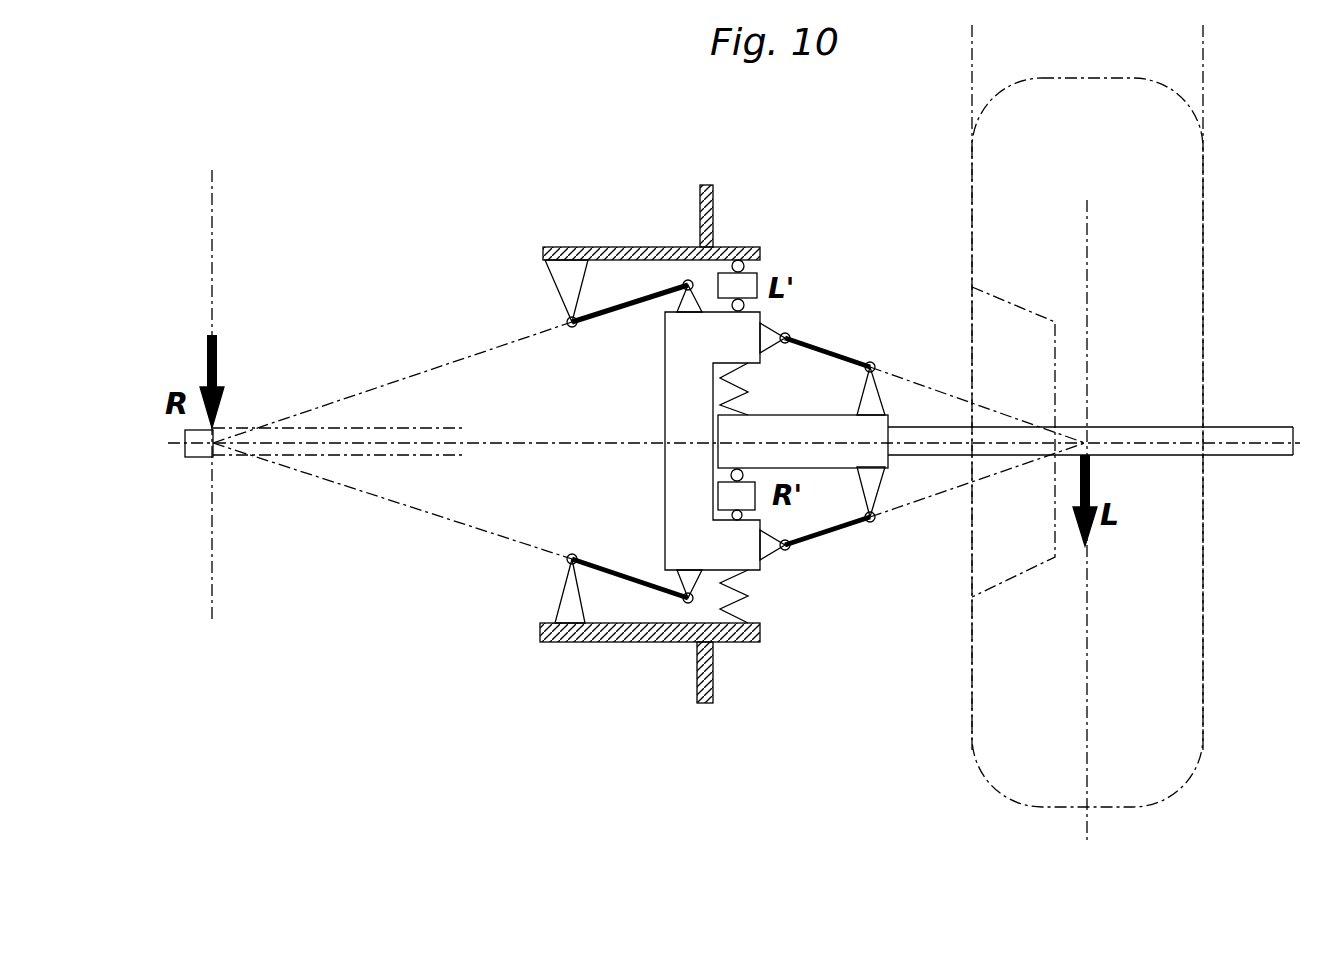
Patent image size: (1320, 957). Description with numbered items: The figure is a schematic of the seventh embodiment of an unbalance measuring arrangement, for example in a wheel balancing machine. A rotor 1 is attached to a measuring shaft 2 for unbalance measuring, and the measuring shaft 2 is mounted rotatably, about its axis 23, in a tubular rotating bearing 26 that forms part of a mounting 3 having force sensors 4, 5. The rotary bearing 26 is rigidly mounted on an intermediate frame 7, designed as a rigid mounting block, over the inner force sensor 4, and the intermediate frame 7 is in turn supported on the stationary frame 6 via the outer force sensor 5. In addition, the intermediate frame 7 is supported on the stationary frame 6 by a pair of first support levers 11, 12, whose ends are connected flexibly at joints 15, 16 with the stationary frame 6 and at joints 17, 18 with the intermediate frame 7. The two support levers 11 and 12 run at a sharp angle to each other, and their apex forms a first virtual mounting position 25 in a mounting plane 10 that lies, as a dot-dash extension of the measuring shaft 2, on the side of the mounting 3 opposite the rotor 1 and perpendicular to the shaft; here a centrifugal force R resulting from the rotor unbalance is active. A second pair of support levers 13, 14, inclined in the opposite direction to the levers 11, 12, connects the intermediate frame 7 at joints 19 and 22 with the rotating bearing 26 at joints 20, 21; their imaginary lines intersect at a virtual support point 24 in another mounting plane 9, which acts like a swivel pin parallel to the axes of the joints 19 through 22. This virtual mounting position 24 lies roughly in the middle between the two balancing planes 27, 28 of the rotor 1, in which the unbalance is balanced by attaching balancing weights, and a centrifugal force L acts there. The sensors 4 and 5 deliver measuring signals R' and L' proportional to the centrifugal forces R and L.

The rotor 1 is at (1090, 75).
The measuring shaft 2 is at (1255, 455).
The mounting 3 is at (580, 458).
The inner force sensor 4 is at (718, 498).
The outer force sensor 5 is at (747, 283).
The stationary frame 6 is at (596, 232).
The intermediate frame 7 is at (673, 473).
The mounting plane 9 is at (1087, 245).
The mounting plane 10 is at (212, 548).
The first support lever 11 is at (620, 326).
The first support lever 12 is at (603, 570).
The second support lever 13 is at (833, 343).
The second support lever 14 is at (830, 530).
The joint 15 is at (572, 328).
The joint 16 is at (568, 561).
The joint 17 is at (688, 280).
The joint 18 is at (682, 600).
The joint 19 is at (788, 336).
The joint 20 is at (875, 365).
The joint 21 is at (878, 520).
The joint 22 is at (788, 550).
The axis 23 is at (1170, 440).
The virtual support point 24 is at (1087, 441).
The first virtual mounting position 25 is at (187, 446).
The tubular rotating bearing 26 is at (718, 430).
The balancing plane 27 is at (1203, 55).
The balancing plane 28 is at (972, 40).